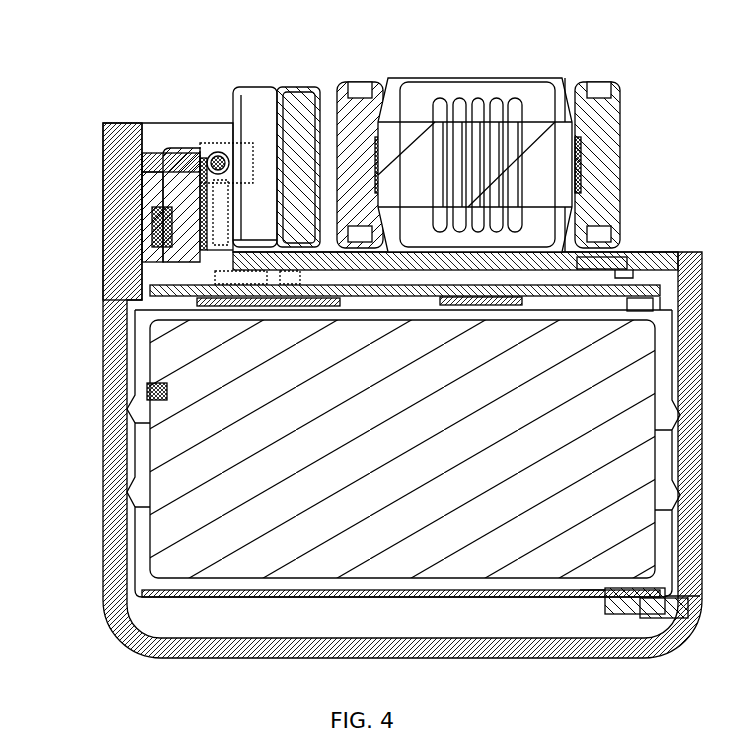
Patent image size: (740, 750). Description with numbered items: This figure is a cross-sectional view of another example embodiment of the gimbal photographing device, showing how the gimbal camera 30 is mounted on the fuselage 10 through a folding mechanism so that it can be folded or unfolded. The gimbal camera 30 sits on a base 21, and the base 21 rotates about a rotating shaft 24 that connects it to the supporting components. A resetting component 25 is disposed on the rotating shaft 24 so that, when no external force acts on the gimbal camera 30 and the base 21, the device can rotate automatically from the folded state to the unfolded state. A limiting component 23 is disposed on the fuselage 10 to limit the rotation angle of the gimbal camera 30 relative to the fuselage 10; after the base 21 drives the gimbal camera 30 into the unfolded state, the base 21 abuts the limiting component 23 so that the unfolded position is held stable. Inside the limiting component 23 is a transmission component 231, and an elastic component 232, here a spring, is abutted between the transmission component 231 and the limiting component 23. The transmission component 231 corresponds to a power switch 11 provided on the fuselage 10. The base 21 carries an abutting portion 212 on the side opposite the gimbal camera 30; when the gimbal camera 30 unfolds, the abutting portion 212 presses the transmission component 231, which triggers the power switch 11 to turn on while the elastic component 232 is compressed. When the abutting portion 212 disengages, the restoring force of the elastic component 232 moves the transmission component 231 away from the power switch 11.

The fuselage 10 is at (197, 513).
The power switch 11 is at (103, 265).
The base 21 is at (296, 100).
The abutting portion 212 is at (236, 140).
The limiting component 23 is at (118, 124).
The transmission component 231 is at (150, 170).
The elastic component 232 is at (148, 210).
The rotating shaft 24 is at (216, 152).
The resetting component 25 is at (203, 157).
The gimbal camera 30 is at (512, 105).